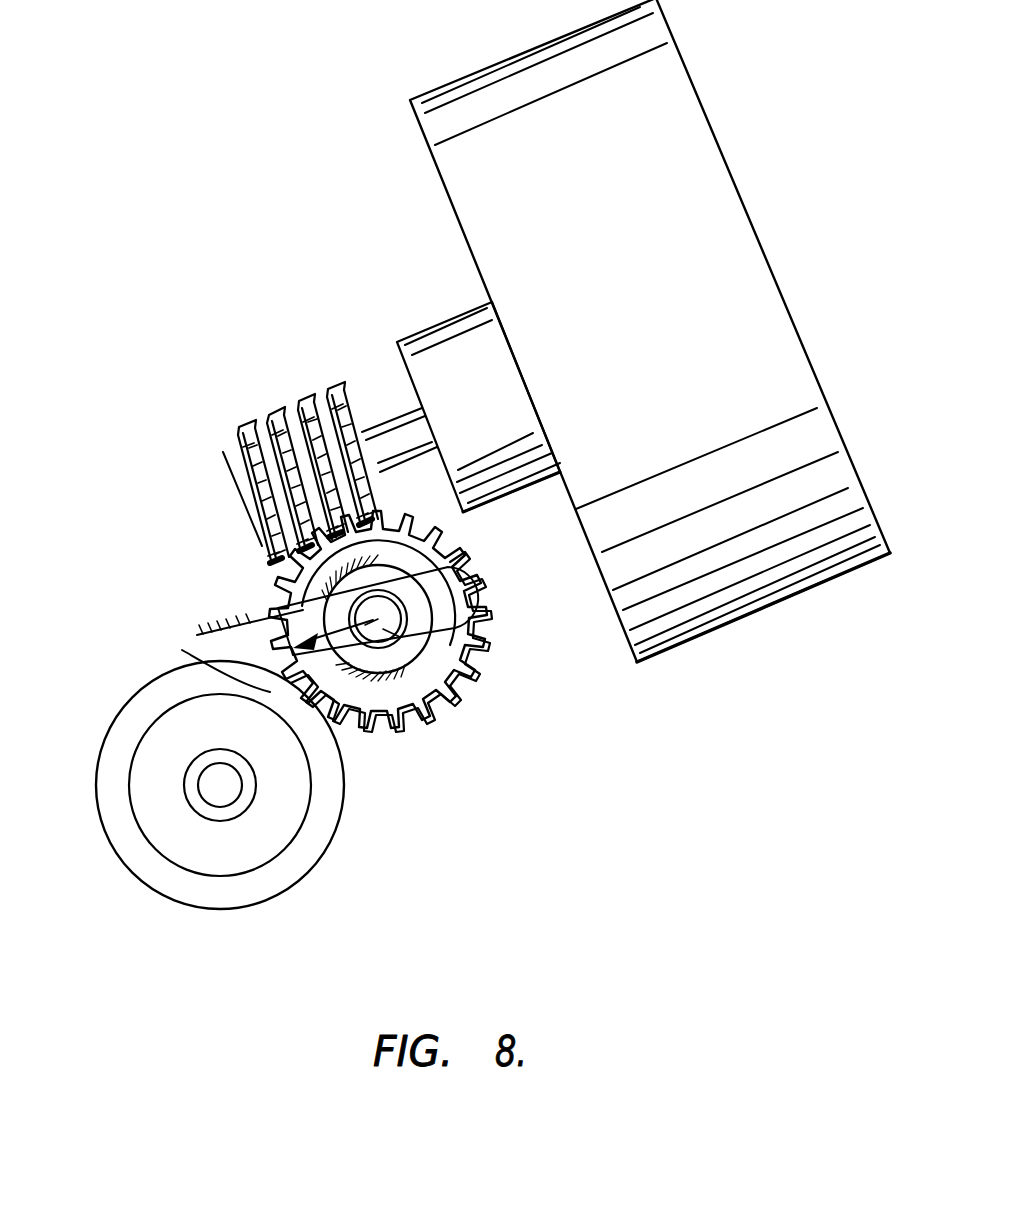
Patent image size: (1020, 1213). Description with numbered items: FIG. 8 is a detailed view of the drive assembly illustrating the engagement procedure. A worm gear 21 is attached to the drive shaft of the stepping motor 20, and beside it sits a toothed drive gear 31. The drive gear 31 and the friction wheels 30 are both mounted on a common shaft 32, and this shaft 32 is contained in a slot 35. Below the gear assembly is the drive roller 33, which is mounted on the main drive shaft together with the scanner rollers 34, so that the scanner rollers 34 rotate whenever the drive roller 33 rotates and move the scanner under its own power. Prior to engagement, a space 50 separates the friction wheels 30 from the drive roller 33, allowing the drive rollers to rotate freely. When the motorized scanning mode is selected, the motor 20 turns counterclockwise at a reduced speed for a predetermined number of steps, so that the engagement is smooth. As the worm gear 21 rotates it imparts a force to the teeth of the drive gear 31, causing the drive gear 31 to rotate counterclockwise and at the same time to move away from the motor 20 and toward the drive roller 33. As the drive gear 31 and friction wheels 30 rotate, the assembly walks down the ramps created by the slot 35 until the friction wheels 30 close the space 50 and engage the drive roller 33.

The stepping motor 20 is at (708, 208).
The worm gear 21 is at (262, 432).
The friction wheels 30 is at (407, 740).
The drive gear 31 is at (273, 585).
The shaft 32 is at (452, 660).
The drive roller 33 is at (127, 788).
The scanner rollers 34 is at (115, 847).
The slot 35 is at (395, 583).
The space 50 is at (196, 661).